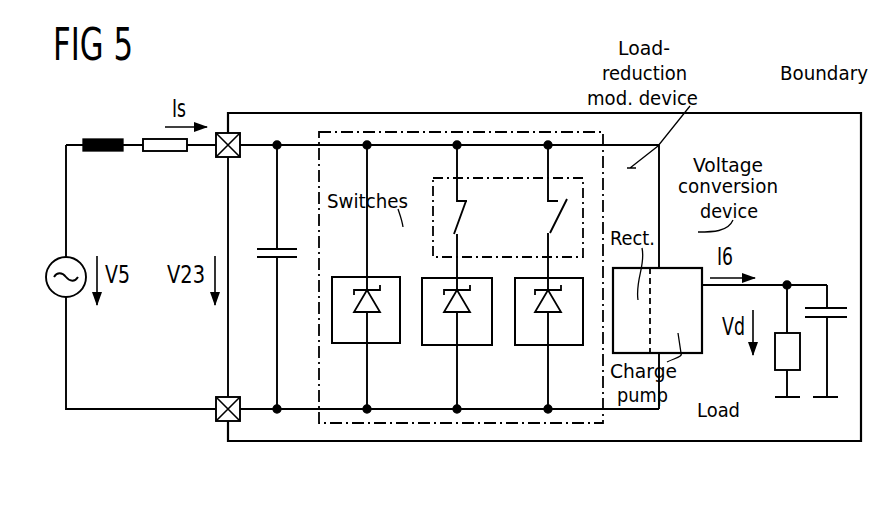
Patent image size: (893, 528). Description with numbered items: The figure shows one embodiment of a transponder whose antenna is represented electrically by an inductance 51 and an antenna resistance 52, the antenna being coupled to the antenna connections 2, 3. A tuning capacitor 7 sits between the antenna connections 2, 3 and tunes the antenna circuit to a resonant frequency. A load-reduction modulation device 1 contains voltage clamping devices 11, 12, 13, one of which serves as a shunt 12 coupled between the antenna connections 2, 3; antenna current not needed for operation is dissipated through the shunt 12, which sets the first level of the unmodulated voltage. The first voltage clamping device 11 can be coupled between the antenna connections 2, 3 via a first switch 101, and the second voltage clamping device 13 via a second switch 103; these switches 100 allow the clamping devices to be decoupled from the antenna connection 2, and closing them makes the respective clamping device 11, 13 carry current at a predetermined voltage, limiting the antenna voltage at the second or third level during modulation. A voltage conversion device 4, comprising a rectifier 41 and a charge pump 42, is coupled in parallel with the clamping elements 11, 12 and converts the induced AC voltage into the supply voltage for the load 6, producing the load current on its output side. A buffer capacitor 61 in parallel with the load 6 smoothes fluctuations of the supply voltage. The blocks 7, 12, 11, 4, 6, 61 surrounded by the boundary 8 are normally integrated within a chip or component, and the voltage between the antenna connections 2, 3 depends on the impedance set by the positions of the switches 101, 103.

The load-reduction modulation device 1 is at (603, 170).
The antenna connection 2 is at (222, 133).
The antenna connection 3 is at (222, 422).
The voltage conversion device 4 is at (678, 268).
The load 6 is at (773, 366).
The tuning capacitor 7 is at (285, 248).
The boundary 8 is at (744, 113).
The first voltage clamping device 11 is at (467, 347).
The shunt 12 is at (377, 345).
The second voltage clamping device 13 is at (560, 347).
The rectifier 41 is at (645, 326).
The charge pump 42 is at (688, 326).
The inductance 51 is at (106, 152).
The antenna resistance 52 is at (167, 152).
The buffer capacitor 61 is at (833, 307).
The switches 100 is at (433, 208).
The first switch 101 is at (463, 217).
The second switch 103 is at (558, 204).